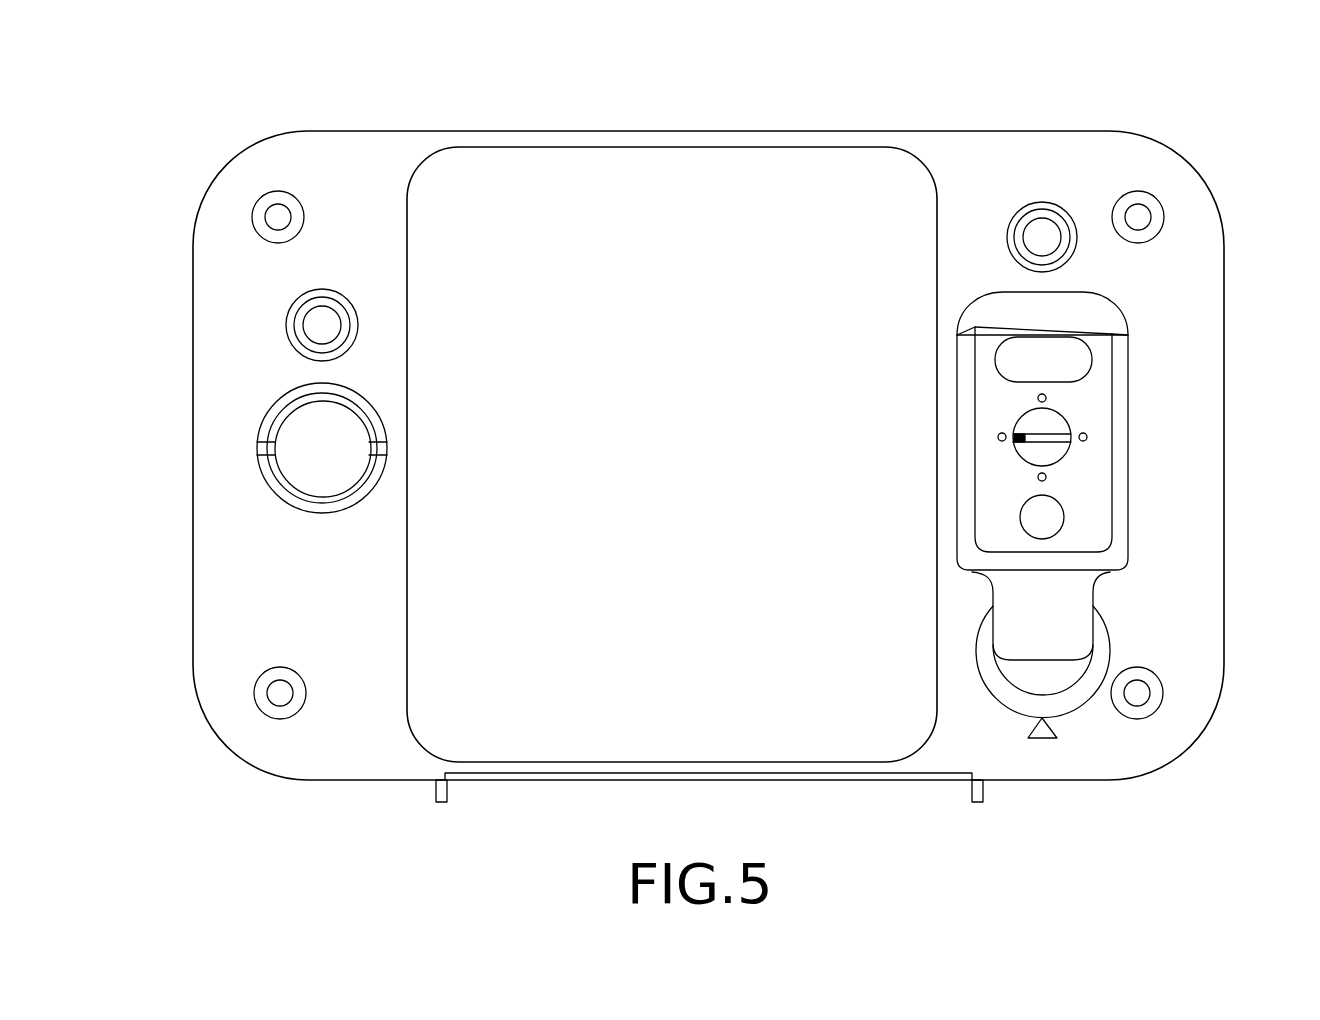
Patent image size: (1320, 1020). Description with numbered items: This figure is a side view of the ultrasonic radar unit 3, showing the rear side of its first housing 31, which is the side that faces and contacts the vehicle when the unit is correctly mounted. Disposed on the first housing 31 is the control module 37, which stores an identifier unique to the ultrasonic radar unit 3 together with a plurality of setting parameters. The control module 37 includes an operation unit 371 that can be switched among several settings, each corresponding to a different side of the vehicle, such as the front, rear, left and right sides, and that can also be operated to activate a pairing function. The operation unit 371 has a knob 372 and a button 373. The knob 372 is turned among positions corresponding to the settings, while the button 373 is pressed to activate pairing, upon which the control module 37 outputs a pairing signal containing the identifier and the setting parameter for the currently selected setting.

The ultrasonic radar unit 3 is at (240, 139).
The first housing 31 is at (204, 197).
The control module 37 is at (1120, 373).
The operation unit 371 is at (1110, 418).
The knob 372 is at (1034, 434).
The button 373 is at (1052, 522).